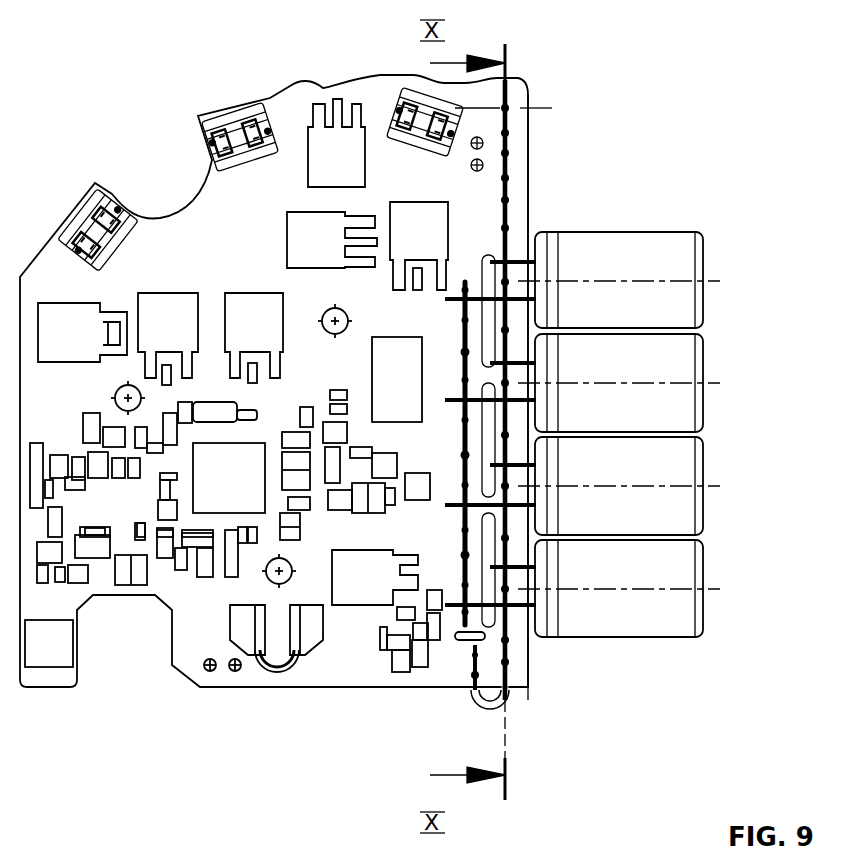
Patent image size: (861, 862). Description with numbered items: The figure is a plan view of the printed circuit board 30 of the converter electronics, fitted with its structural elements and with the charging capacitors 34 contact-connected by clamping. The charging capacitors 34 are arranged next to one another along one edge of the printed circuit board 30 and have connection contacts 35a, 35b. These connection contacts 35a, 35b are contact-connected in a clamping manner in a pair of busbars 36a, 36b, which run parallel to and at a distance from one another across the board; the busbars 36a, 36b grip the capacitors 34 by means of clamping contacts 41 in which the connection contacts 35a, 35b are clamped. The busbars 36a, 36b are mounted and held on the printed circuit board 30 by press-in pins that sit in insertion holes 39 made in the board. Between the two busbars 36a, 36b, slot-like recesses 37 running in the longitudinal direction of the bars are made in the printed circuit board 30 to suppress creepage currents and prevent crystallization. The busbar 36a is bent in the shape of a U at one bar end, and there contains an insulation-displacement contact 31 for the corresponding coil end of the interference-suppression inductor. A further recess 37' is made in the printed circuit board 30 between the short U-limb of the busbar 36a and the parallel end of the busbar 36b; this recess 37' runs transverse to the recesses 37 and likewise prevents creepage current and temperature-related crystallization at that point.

The printed circuit board 30 is at (186, 655).
The insulation-displacement contact 31 is at (508, 662).
The charging capacitors 34 is at (608, 625).
The connection contact 35a is at (530, 230).
The connection contact 35b is at (455, 503).
The busbar 36a is at (508, 90).
The busbar 36b is at (470, 335).
The slot-like recesses 37 is at (638, 441).
The further recess 37' is at (461, 688).
The insertion holes 39 is at (508, 160).
The clamping contacts 41 is at (507, 458).